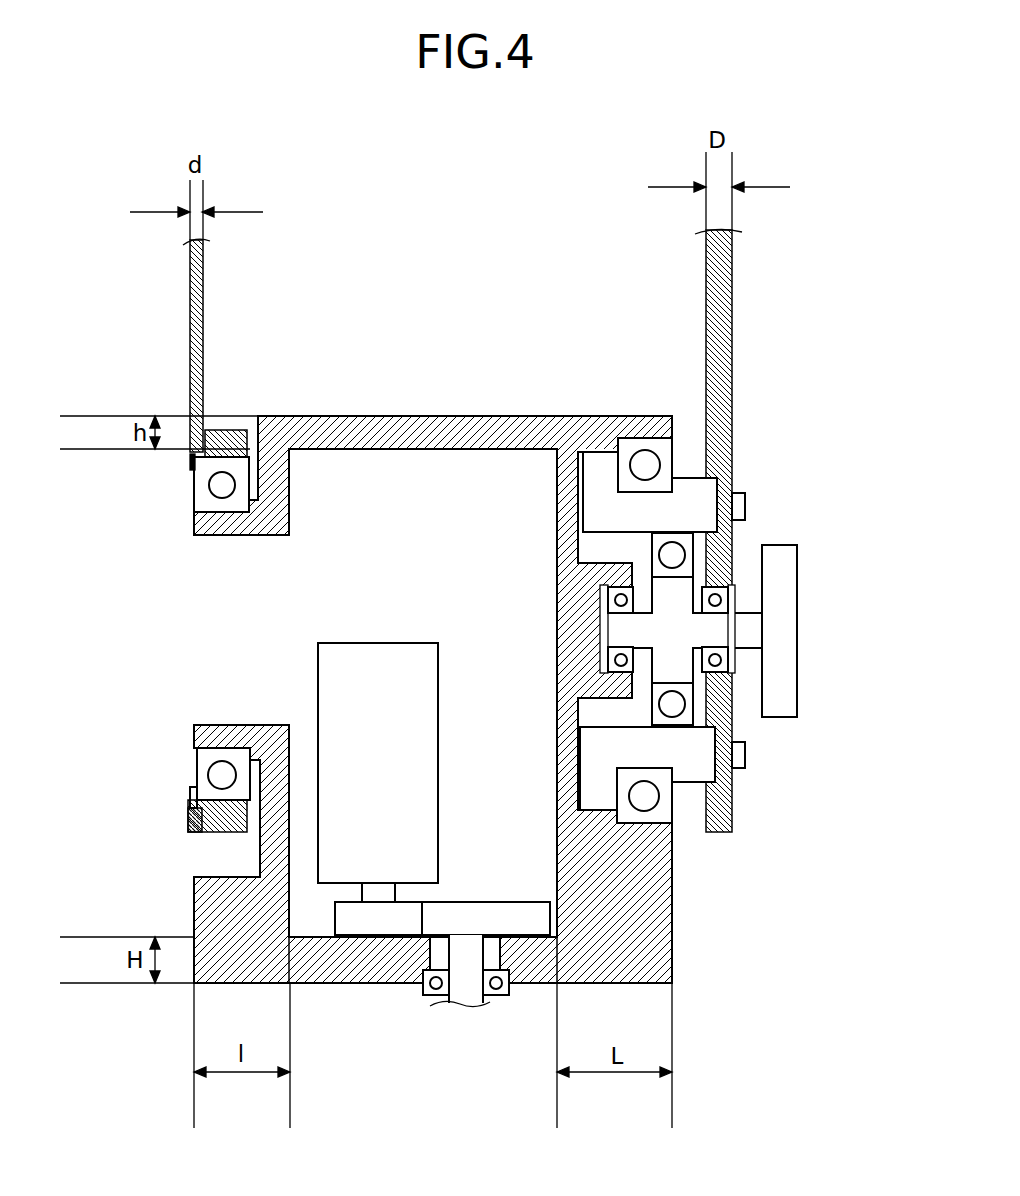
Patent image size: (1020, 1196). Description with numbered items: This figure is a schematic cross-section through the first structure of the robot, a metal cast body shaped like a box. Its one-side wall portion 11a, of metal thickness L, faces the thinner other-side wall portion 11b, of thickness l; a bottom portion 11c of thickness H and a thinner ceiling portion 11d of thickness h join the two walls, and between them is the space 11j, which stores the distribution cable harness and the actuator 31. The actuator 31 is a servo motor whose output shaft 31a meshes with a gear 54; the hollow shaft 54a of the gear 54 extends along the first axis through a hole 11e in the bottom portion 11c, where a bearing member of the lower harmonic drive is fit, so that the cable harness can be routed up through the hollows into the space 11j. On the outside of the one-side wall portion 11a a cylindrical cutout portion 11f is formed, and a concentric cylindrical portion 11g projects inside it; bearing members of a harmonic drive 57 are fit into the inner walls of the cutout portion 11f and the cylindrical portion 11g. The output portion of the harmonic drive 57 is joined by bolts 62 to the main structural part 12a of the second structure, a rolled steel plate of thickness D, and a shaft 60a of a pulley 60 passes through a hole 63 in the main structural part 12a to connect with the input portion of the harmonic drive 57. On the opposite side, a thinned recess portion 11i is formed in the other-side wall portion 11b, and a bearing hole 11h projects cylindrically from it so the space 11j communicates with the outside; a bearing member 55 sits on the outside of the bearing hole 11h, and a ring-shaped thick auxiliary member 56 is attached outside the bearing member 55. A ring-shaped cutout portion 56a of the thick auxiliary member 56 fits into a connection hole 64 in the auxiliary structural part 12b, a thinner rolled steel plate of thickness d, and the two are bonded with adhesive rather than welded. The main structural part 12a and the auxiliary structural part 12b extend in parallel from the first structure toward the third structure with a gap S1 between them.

The one-side wall portion 11a is at (635, 948).
The other-side wall portion 11b is at (220, 915).
The bottom portion 11c is at (368, 962).
The ceiling portion 11d is at (338, 432).
The hole 11e is at (445, 998).
The cutout portion 11f is at (665, 812).
The cylindrical portion 11g is at (612, 590).
The bearing hole 11h is at (228, 725).
The recess portion 11i is at (258, 858).
The space 11j is at (436, 543).
The gap S1 is at (441, 287).
The main structural part 12a is at (725, 372).
The auxiliary structural part 12b is at (197, 340).
The actuator 31 is at (420, 815).
The output shaft 31a is at (407, 915).
The gear 54 is at (515, 915).
The shaft 54a is at (468, 985).
The bearing member 55 is at (205, 762).
The thick auxiliary member 56 is at (218, 828).
The cutout portion 56a is at (192, 818).
The harmonic drive 57 is at (694, 478).
The pulley 60 is at (790, 587).
The shaft 60a is at (750, 620).
The bolts 62 is at (745, 755).
The hole 63 is at (732, 657).
The connection hole 64 is at (193, 458).